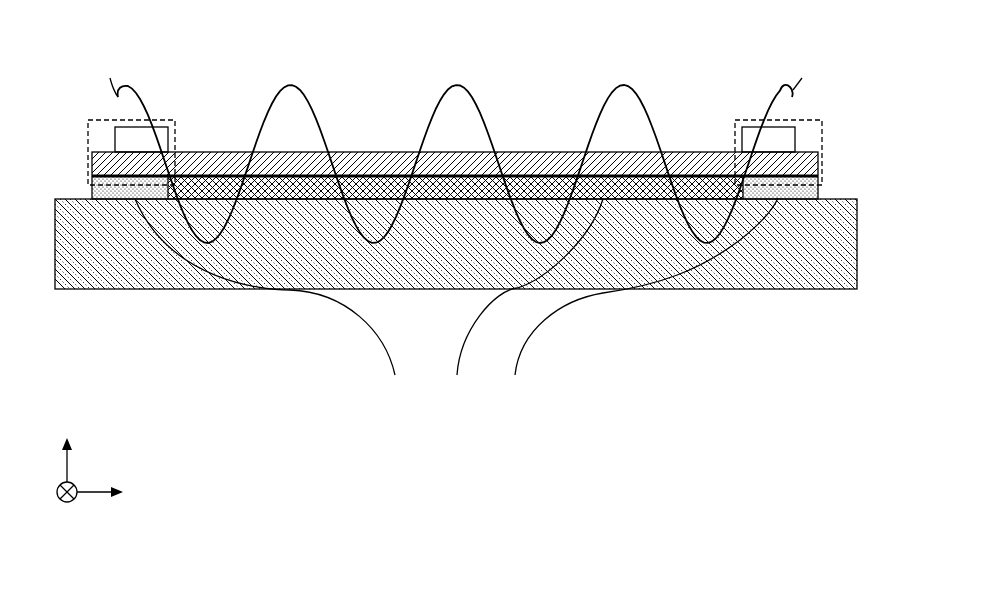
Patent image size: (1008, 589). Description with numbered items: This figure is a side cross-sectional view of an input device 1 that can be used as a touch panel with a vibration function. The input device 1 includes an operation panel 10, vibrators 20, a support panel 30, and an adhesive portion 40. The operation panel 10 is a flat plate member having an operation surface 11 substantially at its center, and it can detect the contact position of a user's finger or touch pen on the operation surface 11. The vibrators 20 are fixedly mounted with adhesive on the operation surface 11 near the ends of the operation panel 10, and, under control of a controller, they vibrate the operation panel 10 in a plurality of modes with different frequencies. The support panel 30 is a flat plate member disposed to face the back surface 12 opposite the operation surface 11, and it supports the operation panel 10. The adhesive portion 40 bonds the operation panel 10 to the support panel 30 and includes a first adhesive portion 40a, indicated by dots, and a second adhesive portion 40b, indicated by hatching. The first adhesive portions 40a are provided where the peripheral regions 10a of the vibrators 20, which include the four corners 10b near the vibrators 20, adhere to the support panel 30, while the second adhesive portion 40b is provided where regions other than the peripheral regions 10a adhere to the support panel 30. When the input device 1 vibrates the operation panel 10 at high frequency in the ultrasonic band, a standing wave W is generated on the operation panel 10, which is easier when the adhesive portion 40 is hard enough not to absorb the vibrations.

The input device 1 is at (750, 63).
The operation panel 10 is at (560, 162).
The peripheral regions 10a is at (92, 115).
The four corners 10b is at (107, 163).
The operation surface 11 is at (522, 155).
The back surface 12 is at (707, 180).
The vibrators 20 is at (125, 138).
The support panel 30 is at (780, 267).
The adhesive portion 40 is at (456, 323).
The first adhesive portion 40a is at (456, 301).
The second adhesive portion 40b is at (540, 400).
The standing wave W is at (460, 80).